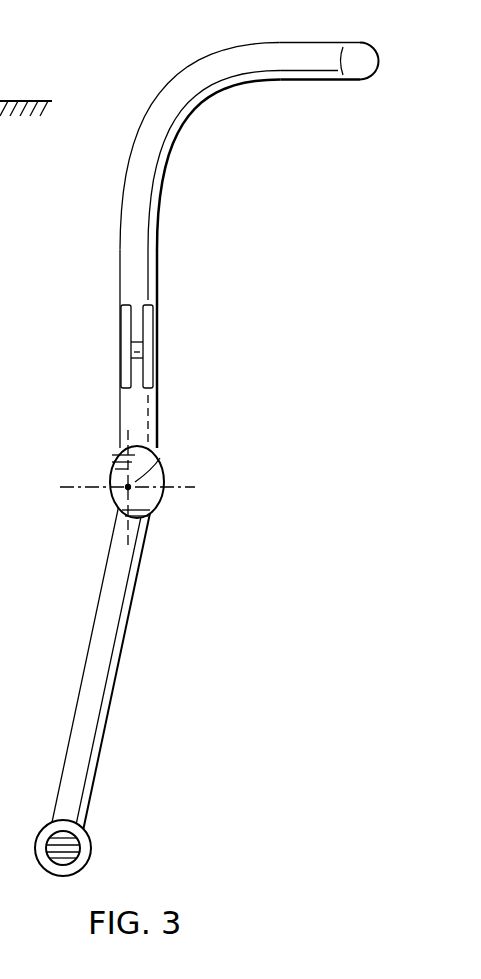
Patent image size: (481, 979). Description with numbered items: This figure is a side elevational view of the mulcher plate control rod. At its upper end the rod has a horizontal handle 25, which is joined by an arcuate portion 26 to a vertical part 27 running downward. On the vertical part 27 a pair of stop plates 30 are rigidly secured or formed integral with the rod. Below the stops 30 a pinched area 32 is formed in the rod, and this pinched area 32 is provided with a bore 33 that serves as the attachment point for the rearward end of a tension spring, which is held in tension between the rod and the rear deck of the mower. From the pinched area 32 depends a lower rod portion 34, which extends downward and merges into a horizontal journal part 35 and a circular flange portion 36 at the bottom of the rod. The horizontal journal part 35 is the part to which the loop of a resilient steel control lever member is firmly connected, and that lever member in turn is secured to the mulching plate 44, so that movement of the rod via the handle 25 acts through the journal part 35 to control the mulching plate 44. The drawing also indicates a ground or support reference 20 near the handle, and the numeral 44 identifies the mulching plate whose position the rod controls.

The ground / support surface 20 is at (14, 100).
The horizontal handle 25 is at (378, 52).
The arcuate portion 26 is at (133, 147).
The vertical part 27 is at (119, 294).
The stop plates 30 is at (120, 356).
The pinched area 32 is at (165, 482).
The bore 33 is at (160, 458).
The lower rod portion 34 is at (90, 632).
The horizontal journal part 35 is at (82, 848).
The circular flange portion 36 is at (88, 836).
The mulching plate 44 is at (15, 29).